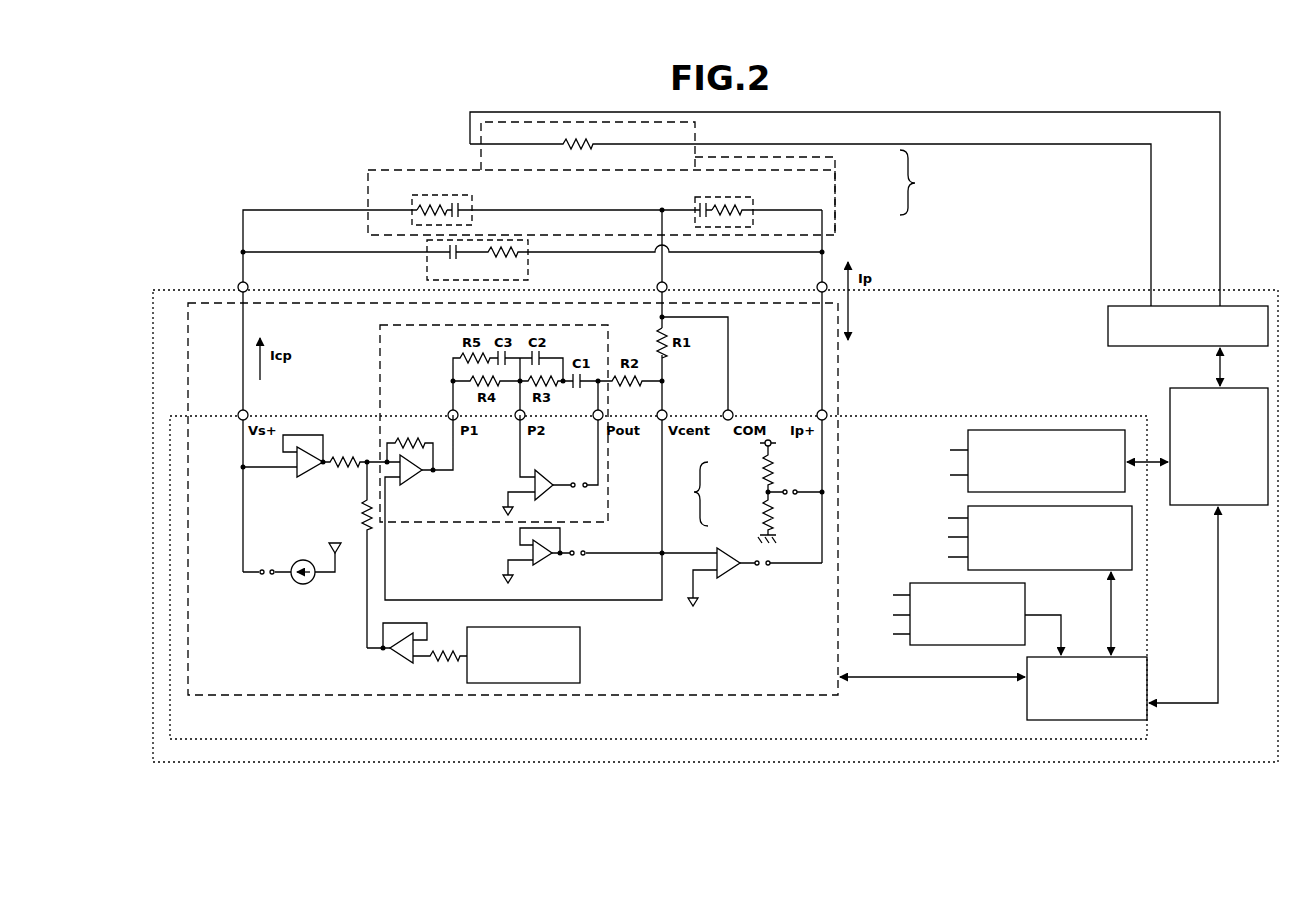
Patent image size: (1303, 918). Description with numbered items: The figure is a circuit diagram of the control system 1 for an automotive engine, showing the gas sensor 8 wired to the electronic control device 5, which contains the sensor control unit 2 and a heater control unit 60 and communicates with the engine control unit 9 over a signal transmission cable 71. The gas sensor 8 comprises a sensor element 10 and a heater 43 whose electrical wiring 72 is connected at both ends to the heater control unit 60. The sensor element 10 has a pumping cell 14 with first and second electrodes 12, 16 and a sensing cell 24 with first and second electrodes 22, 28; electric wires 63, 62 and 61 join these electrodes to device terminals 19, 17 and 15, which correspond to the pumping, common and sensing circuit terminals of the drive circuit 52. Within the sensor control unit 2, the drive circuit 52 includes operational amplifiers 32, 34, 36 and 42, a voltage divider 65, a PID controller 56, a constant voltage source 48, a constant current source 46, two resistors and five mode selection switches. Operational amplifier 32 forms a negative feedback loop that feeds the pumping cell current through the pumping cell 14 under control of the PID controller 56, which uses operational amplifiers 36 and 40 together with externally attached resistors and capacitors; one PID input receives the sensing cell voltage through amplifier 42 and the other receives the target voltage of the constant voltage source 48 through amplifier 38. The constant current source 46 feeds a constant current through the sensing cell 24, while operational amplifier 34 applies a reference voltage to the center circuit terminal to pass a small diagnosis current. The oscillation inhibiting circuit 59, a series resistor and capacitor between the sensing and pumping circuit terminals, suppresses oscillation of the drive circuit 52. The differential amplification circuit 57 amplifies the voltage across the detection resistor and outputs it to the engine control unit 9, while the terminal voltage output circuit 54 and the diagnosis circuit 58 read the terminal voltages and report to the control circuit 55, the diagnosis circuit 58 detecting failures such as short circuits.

The control system 1 is at (300, 158).
The sensor control unit 2 is at (935, 416).
The electronic control device 5 is at (1013, 290).
The gas sensor 8 is at (915, 182).
The engine control unit 9 is at (1168, 403).
The sensor element 10 is at (835, 200).
The first pumping cell electrode 12 is at (750, 210).
The pumping cell 14 is at (733, 197).
The second pumping cell electrode 16 is at (700, 210).
The device terminal 15 is at (239, 283).
The device terminal 17 is at (658, 283).
The device terminal 19 is at (818, 283).
The first sensing cell electrode 22 is at (462, 210).
The sensing cell 24 is at (452, 197).
The second sensing cell electrode 28 is at (415, 210).
The operational amplifier 32 is at (748, 578).
The operational amplifier 34 is at (530, 552).
The operational amplifier 36 is at (545, 470).
The amplifier 38 is at (395, 661).
The operational amplifier 40 is at (412, 480).
The operational amplifier 42 is at (308, 476).
The heater 43 is at (835, 160).
The constant current source 46 is at (310, 584).
The constant voltage source 48 is at (582, 656).
The drive circuit 52 is at (188, 378).
The terminal voltage output circuit 54 is at (966, 507).
The control circuit 55 is at (1025, 705).
The PID controller 56 is at (378, 358).
The differential amplification circuit 57 is at (966, 437).
The diagnosis circuit 58 is at (928, 583).
The oscillation inhibiting circuit 59 is at (427, 268).
The heater control unit 60 is at (1106, 328).
The electric wire 61 is at (240, 234).
The electric wire 62 is at (665, 268).
The electric wire 63 is at (823, 246).
The voltage divider 65 is at (747, 491).
The signal transmission cable 71 is at (1192, 705).
The electrical wiring 72 is at (592, 147).